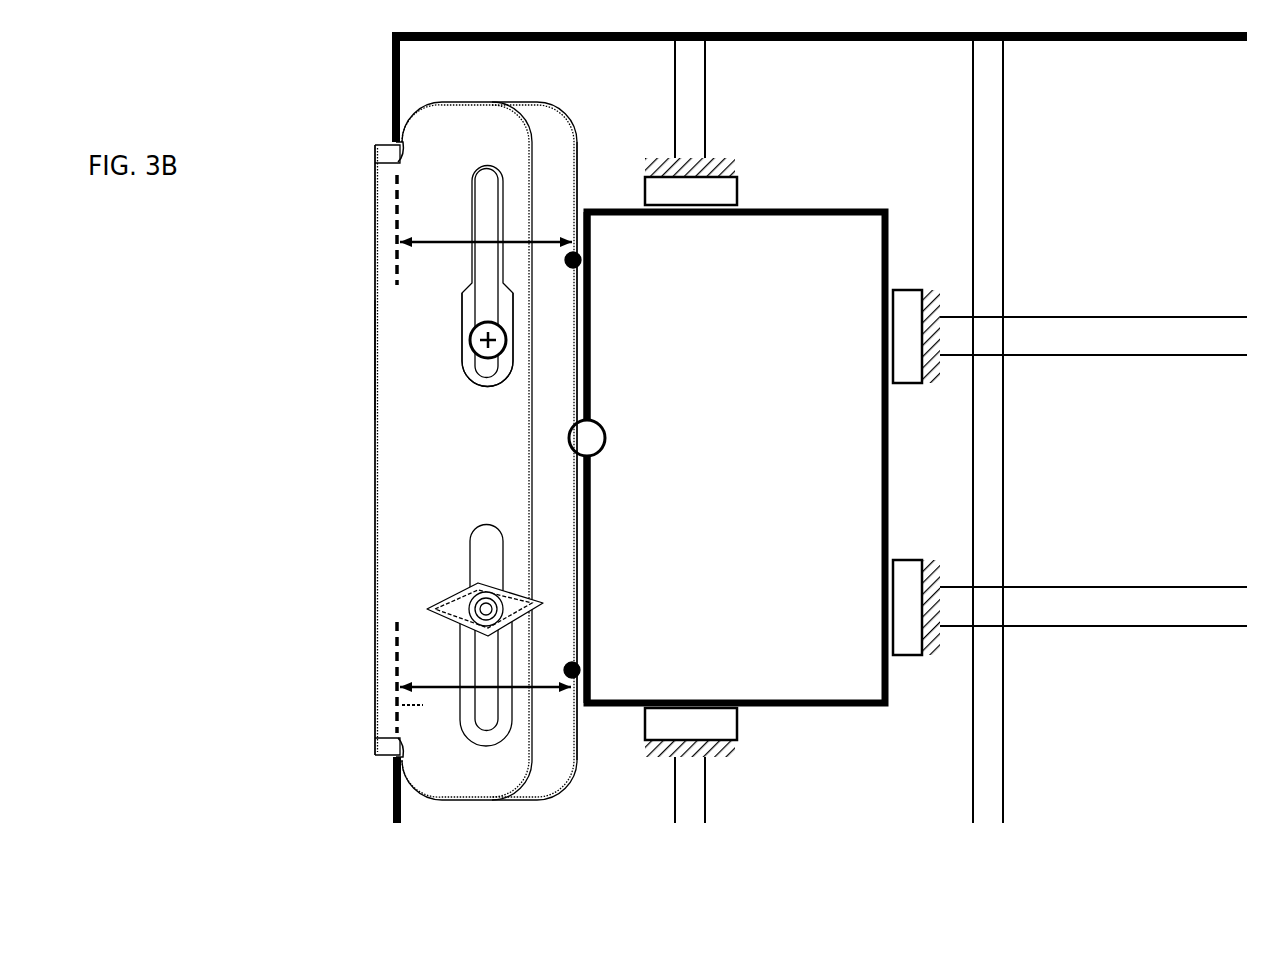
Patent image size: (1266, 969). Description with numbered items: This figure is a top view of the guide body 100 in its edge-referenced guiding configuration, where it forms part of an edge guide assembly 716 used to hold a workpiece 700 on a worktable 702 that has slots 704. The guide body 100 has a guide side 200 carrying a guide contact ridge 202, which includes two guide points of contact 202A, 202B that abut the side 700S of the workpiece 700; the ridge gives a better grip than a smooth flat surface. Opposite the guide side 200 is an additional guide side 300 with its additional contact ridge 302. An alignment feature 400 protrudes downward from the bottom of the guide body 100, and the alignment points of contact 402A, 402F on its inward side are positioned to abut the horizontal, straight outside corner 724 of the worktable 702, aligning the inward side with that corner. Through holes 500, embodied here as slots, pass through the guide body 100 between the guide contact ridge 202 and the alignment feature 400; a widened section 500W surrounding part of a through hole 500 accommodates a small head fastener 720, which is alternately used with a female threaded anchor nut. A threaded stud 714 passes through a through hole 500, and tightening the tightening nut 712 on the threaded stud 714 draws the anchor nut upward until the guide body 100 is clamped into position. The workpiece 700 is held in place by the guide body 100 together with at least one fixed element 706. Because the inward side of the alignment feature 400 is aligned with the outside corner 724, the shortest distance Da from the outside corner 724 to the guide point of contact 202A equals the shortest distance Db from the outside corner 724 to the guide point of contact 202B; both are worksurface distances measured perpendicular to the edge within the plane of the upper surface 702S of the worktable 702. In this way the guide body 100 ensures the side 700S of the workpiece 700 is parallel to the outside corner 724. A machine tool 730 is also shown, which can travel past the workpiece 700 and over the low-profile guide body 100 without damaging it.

The guide body 100 is at (357, 177).
The guide side 200 is at (527, 442).
The guide contact ridge 202 is at (580, 170).
The guide point of contact 202A is at (583, 666).
The guide point of contact 202B is at (582, 262).
The additional guide side 300 is at (375, 317).
The additional contact ridge 302 is at (335, 450).
The alignment feature 400 is at (383, 763).
The alignment point of contact 402A is at (406, 146).
The alignment point of contact 402F is at (406, 758).
The through hole 500 is at (475, 222).
The widened section 500W is at (468, 306).
The workpiece 700 is at (855, 266).
The side of the workpiece 700S is at (591, 360).
The worktable 702 is at (1172, 739).
The upper surface of the worktable 702S is at (1187, 774).
The slots 704 is at (1081, 352).
The fixed element 706 is at (735, 190).
The tightening nut 712 is at (458, 594).
The threaded stud 714 is at (489, 606).
The edge guide assembly 716 is at (296, 358).
The small head fastener 720 is at (490, 360).
The outside corner of the worktable 724 is at (393, 93).
The machine tool 730 is at (605, 447).
The shortest distance Da is at (450, 689).
The shortest distance Db is at (450, 244).